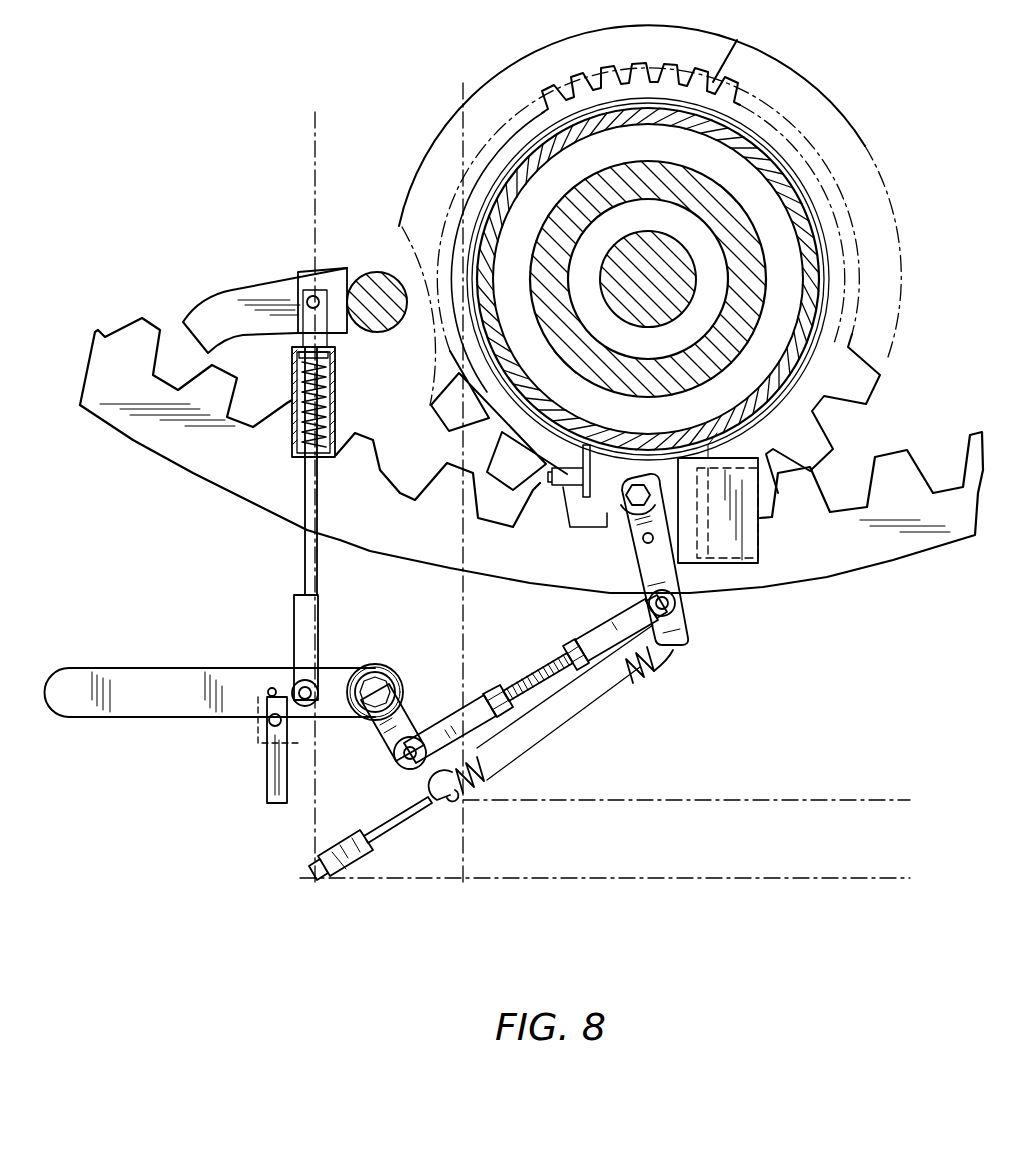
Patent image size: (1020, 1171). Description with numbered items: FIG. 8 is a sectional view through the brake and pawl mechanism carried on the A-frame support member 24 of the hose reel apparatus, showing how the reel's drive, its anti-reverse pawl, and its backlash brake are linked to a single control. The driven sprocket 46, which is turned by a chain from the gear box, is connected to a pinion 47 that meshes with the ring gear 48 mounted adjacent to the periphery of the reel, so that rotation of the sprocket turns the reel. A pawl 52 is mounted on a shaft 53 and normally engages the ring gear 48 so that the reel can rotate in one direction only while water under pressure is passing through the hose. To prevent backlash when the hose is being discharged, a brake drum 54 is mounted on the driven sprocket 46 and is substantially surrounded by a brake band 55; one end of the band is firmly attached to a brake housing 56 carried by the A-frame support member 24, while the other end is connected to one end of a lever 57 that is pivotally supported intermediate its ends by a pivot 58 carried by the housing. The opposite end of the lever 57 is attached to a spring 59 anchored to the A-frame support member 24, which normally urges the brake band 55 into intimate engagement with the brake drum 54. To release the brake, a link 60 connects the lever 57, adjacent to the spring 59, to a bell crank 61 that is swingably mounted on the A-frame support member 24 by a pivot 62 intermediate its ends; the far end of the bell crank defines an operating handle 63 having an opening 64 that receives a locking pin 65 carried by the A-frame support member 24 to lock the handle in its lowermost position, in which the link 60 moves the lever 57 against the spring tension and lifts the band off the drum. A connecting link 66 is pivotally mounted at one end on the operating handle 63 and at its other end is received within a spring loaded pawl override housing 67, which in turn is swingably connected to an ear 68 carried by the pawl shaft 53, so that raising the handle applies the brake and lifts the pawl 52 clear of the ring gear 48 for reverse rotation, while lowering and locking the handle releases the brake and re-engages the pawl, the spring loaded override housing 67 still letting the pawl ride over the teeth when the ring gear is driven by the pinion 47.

The A-frame support member 24 is at (313, 147).
The driven sprocket 46 is at (716, 80).
The pinion 47 is at (866, 380).
The ring gear 48 is at (215, 470).
The pawl 52 is at (258, 292).
The shaft 53 is at (372, 272).
The brake drum 54 is at (790, 195).
The brake band 55 is at (823, 282).
The brake housing 56 is at (752, 533).
The lever 57 is at (640, 570).
The pivot 58 is at (642, 540).
The spring 59 is at (650, 682).
The link 60 is at (592, 640).
The bell crank 61 is at (410, 722).
The pivot 62 is at (380, 680).
The operating handle 63 is at (140, 675).
The opening 64 is at (272, 688).
The locking pin 65 is at (272, 728).
The connecting link 66 is at (305, 552).
The spring loaded pawl override housing 67 is at (338, 390).
The ear 68 is at (332, 290).